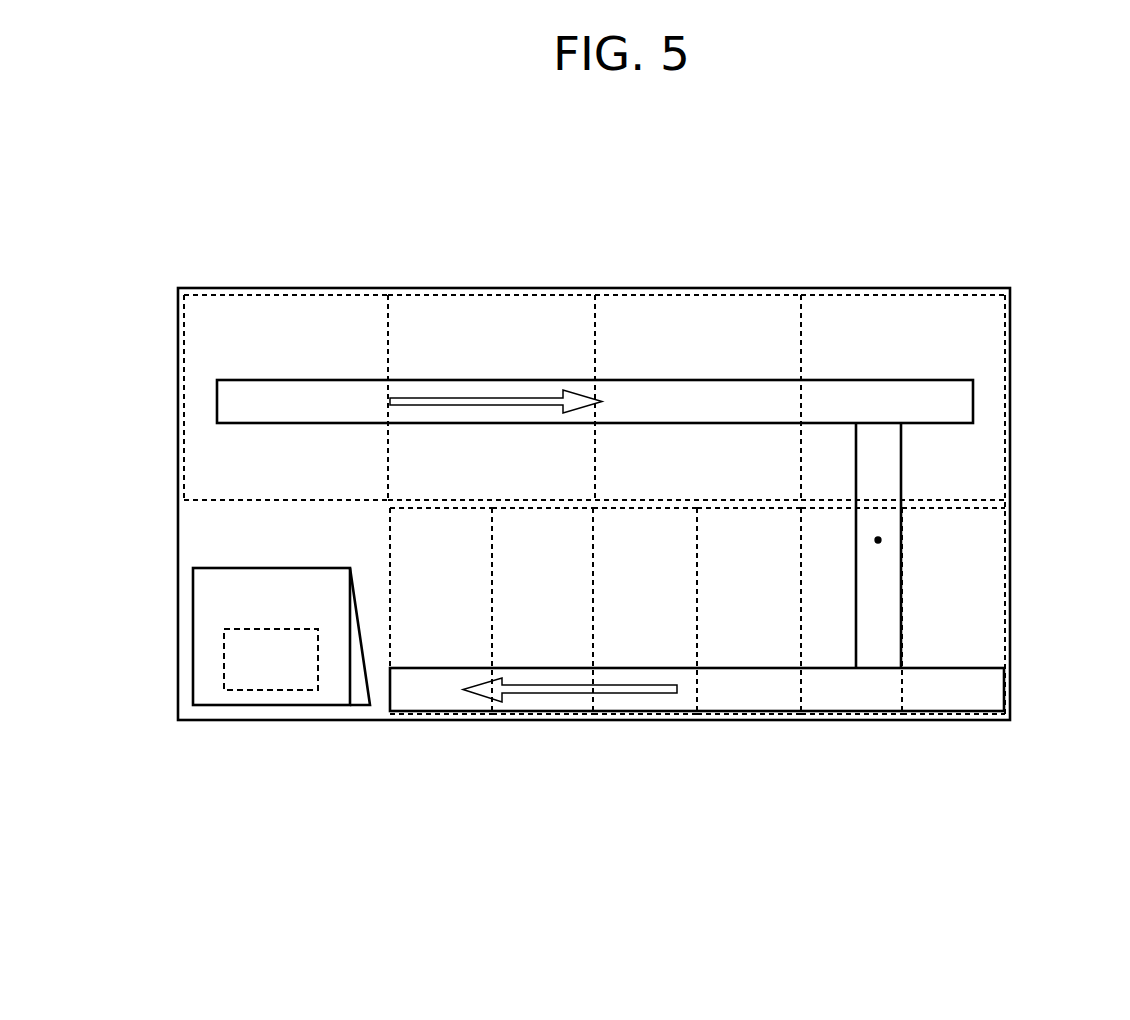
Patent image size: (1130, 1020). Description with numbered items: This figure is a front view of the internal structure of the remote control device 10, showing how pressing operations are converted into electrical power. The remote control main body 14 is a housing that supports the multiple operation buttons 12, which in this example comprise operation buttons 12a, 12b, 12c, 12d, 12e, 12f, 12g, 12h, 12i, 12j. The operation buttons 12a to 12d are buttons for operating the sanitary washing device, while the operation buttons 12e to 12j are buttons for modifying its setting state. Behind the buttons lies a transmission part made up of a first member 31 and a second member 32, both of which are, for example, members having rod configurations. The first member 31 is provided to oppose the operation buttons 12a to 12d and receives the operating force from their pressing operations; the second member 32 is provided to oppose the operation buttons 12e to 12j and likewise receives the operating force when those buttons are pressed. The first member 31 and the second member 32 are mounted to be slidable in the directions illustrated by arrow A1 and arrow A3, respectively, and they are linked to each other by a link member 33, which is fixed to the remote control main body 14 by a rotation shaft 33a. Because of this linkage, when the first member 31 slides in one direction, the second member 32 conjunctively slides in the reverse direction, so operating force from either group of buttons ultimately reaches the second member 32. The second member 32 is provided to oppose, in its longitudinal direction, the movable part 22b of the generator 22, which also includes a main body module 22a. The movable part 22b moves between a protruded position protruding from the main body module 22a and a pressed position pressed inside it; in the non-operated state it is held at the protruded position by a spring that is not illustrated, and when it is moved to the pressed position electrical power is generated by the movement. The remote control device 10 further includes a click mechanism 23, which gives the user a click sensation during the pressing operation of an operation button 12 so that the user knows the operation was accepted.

The remote control device 10 is at (930, 172).
The operation buttons 12 is at (594, 532).
The operation button 12a is at (490, 330).
The operation button 12b is at (695, 330).
The operation button 12c is at (902, 330).
The operation button 12d is at (283, 330).
The operation button 12e is at (942, 716).
The operation button 12f is at (852, 716).
The operation button 12g is at (735, 716).
The operation button 12h is at (650, 716).
The operation button 12i is at (528, 716).
The operation button 12j is at (445, 716).
The remote control main body 14 is at (1011, 395).
The generator 22 is at (232, 566).
The main body module 22a is at (232, 602).
The movable part 22b is at (357, 692).
The click mechanism 23 is at (224, 660).
The first member 31 is at (735, 405).
The second member 32 is at (780, 690).
The link member 33 is at (877, 596).
The rotation shaft 33a is at (881, 540).
The arrow A1 is at (532, 392).
The arrow A3 is at (572, 700).